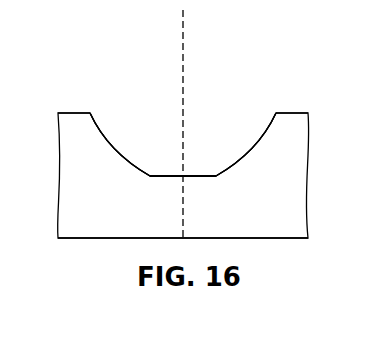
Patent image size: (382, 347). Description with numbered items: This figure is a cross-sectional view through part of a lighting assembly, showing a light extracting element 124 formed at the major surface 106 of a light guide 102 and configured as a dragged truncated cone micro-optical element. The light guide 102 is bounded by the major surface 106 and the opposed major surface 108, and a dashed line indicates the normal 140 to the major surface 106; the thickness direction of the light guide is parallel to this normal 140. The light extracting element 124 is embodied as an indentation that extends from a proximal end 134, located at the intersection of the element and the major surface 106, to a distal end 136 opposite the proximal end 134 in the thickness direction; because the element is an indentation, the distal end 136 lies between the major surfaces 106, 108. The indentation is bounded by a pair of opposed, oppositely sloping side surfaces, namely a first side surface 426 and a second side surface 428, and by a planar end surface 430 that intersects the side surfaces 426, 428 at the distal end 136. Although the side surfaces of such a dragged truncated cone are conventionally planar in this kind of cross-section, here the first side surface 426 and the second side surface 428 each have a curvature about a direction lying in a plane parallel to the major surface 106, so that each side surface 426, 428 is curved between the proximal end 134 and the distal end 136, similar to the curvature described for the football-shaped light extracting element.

The light guide 102 is at (316, 174).
The major surface 106 is at (289, 113).
The major surface 108 is at (273, 240).
The light extracting element 124 is at (120, 95).
The proximal end 134 is at (86, 104).
The distal end 136 is at (200, 188).
The normal 140 is at (185, 98).
The first side surface 426 is at (108, 143).
The second side surface 428 is at (258, 141).
The planar end surface 430 is at (172, 178).